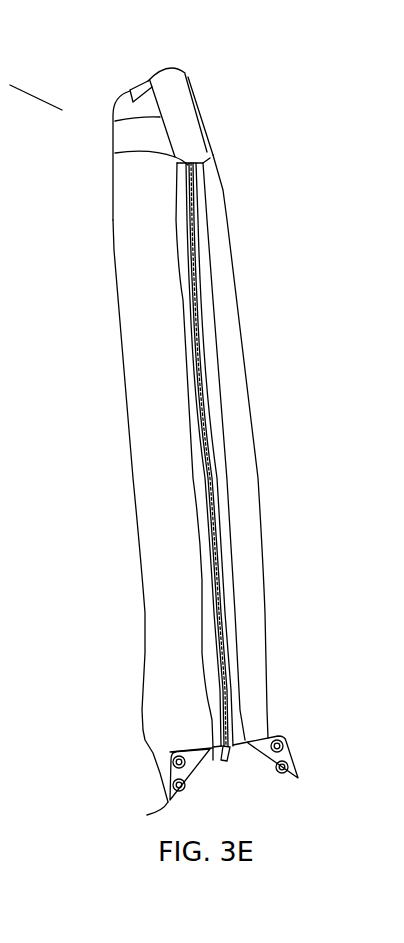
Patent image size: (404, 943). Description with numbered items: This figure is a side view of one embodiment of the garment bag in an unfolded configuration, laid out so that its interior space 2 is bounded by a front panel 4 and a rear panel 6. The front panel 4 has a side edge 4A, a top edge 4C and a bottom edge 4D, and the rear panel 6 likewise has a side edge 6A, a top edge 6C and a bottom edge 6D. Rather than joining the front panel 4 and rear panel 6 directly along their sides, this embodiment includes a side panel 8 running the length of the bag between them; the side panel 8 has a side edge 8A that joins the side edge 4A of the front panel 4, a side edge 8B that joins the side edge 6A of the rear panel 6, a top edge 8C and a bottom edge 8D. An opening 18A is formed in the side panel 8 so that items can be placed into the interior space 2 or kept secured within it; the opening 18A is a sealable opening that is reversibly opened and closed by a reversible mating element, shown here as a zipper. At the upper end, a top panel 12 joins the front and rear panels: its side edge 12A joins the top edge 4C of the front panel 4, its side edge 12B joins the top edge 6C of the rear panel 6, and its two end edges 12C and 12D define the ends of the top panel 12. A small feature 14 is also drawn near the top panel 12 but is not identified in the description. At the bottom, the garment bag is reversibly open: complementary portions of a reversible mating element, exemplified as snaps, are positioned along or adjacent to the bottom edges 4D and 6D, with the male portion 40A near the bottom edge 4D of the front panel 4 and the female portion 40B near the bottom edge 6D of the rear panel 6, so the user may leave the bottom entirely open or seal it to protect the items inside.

The interior space 2 is at (250, 787).
The front panel 4 is at (222, 244).
The side edge of front panel 4A is at (215, 342).
The top edge of front panel 4C is at (187, 77).
The bottom edge of front panel 4D is at (310, 772).
The rear panel 6 is at (140, 262).
The side edge of rear panel 6A is at (182, 377).
The top edge of rear panel 6C is at (130, 95).
The bottom edge of rear panel 6D is at (137, 819).
The side panel 8 is at (187, 459).
The side edge of side panel 8A is at (213, 362).
The side edge of side panel 8B is at (190, 390).
The top edge of side panel 8C is at (205, 166).
The bottom edge of side panel 8D is at (244, 740).
The top panel 12 is at (180, 127).
The side edge of top panel 12A is at (193, 105).
The side edge of top panel 12B is at (115, 121).
The end edge of top panel 12C is at (173, 73).
The end edge of top panel 12D is at (115, 153).
The tab 14 is at (148, 80).
The opening 18A is at (208, 450).
The male portion of reversible mating element 40A is at (288, 763).
The female portion of reversible mating element 40B is at (173, 785).